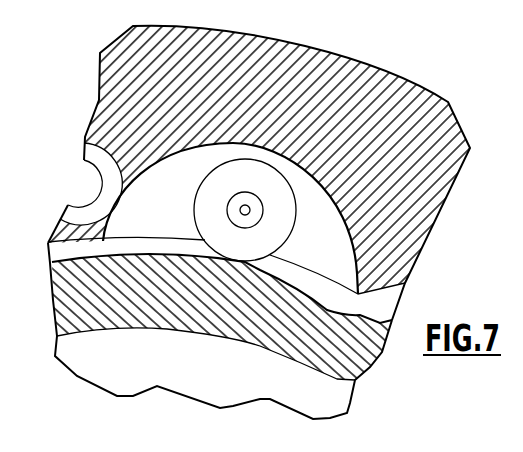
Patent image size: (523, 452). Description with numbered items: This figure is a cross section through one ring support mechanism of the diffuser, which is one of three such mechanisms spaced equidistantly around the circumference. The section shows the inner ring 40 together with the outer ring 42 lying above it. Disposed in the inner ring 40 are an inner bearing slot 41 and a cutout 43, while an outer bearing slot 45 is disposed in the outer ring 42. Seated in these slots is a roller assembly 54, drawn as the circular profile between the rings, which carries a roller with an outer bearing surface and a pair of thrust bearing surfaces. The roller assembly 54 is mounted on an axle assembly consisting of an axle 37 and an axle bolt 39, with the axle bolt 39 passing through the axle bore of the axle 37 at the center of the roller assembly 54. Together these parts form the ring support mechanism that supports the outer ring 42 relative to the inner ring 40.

The axle 37 is at (258, 223).
The axle bolt 39 is at (240, 209).
The inner ring 40 is at (367, 367).
The inner bearing slot 41 is at (68, 205).
The upper body member 42 is at (417, 85).
The cutout 43 is at (347, 307).
The outer bearing slot 45 is at (158, 172).
The roller assembly 54 is at (253, 162).